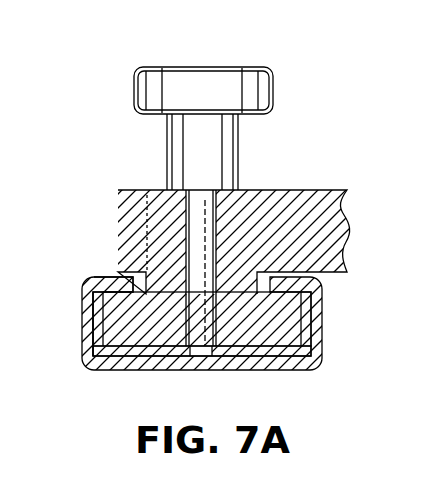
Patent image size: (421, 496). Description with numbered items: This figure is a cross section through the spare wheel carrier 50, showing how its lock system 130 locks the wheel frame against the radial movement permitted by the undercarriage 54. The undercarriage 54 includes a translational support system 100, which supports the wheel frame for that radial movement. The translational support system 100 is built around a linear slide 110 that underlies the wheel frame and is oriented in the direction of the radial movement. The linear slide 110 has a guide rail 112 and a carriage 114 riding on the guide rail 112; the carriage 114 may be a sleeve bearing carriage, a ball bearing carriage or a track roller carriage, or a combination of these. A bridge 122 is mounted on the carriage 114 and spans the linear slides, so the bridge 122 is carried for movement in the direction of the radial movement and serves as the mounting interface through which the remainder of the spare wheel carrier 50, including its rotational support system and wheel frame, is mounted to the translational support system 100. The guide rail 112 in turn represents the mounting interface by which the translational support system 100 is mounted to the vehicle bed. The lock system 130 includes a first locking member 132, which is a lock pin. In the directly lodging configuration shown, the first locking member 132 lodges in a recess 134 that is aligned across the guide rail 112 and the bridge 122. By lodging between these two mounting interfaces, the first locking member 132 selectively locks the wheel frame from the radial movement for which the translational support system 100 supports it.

The lock system 130 is at (274, 90).
The first locking member 132 is at (239, 147).
The bridge 122 is at (352, 226).
The undercarriage 54 is at (83, 285).
The translational support system 100 is at (82, 303).
The linear slide 110 is at (210, 280).
The carriage 114 is at (313, 301).
The guide rail 112 is at (370, 290).
The recess 134 is at (206, 326).
The spare wheel carrier 50 is at (117, 372).